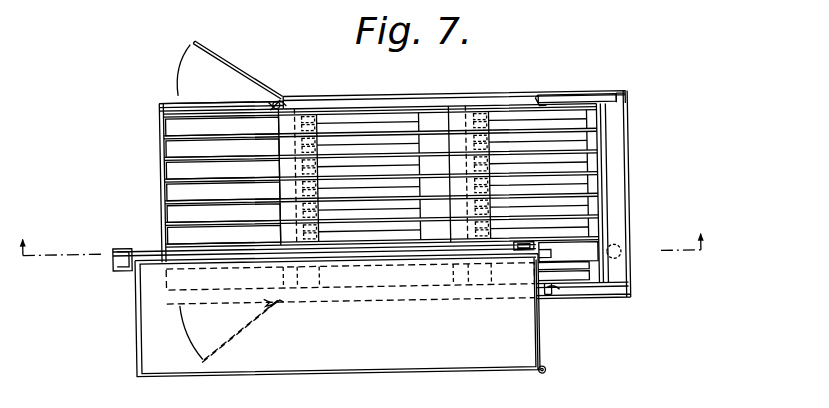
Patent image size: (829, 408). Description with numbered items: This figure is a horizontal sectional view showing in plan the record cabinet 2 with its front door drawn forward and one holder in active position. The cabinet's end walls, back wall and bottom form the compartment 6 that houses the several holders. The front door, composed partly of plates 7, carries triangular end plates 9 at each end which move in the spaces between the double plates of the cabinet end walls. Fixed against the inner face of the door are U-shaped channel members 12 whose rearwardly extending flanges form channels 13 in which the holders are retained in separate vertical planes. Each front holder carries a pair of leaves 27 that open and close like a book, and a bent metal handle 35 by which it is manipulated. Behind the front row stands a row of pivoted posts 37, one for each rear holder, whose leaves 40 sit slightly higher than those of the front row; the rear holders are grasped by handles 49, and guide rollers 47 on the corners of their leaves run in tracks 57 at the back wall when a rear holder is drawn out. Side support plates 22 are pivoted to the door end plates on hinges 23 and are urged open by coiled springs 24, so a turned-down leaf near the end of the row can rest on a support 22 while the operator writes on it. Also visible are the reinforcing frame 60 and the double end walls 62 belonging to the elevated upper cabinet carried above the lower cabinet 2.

The frame 2 is at (631, 216).
The compartment 6 is at (362, 245).
The plates 7 is at (160, 129).
The end plates 9 is at (188, 98).
The channel members 12 is at (172, 176).
The channels 13 is at (178, 208).
The plates 22 is at (212, 57).
The hinges 23 is at (270, 98).
The coiled springs 24 is at (252, 94).
The leaves 27 is at (365, 127).
The handle 35 is at (289, 146).
The posts 37 is at (141, 253).
The leaves 40 is at (632, 172).
The guide rollers 47 is at (543, 375).
The handles 49 is at (458, 148).
The tracks 57 is at (595, 145).
The reinforcing frame 60 is at (535, 102).
The end walls 62 is at (401, 98).